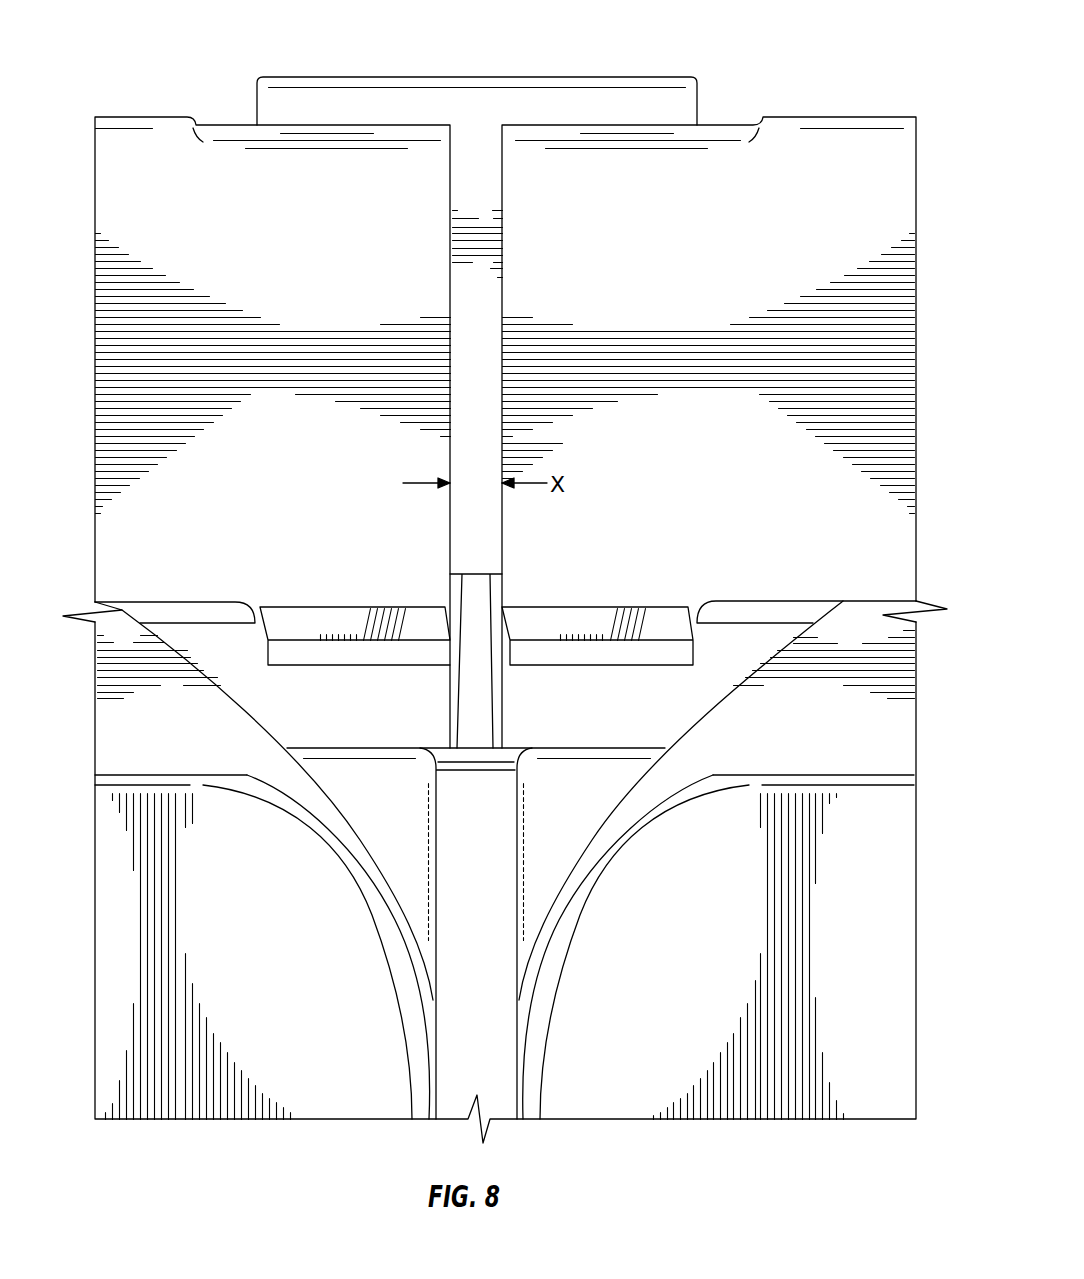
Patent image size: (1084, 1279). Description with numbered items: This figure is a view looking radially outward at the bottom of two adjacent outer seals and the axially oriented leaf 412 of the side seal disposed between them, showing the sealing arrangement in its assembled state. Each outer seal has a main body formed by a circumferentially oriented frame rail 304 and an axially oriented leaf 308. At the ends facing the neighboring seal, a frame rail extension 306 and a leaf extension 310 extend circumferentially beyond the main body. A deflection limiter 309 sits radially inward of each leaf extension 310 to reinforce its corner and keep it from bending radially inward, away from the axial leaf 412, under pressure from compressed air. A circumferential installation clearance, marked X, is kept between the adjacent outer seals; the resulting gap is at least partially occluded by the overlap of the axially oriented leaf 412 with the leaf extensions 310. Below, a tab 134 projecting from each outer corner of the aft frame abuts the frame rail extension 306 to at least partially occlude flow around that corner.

The tab 134 is at (392, 815).
The frame rail 304 is at (277, 692).
The frame rail extension 306 is at (361, 725).
The leaf 308 is at (118, 227).
The deflection limiter 309 is at (560, 618).
The leaf extension 310 is at (233, 163).
The axially oriented leaf 412 is at (473, 138).